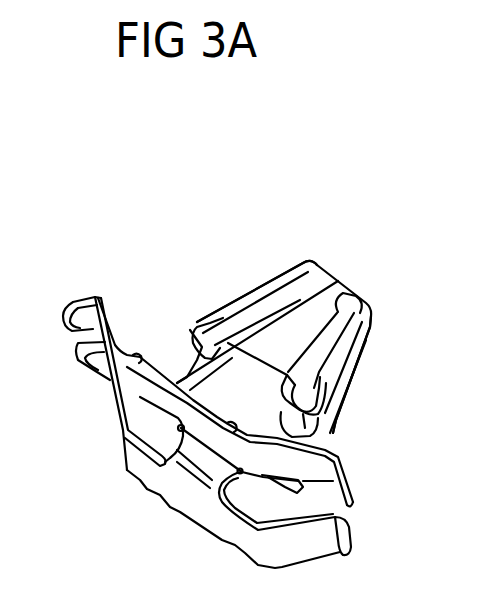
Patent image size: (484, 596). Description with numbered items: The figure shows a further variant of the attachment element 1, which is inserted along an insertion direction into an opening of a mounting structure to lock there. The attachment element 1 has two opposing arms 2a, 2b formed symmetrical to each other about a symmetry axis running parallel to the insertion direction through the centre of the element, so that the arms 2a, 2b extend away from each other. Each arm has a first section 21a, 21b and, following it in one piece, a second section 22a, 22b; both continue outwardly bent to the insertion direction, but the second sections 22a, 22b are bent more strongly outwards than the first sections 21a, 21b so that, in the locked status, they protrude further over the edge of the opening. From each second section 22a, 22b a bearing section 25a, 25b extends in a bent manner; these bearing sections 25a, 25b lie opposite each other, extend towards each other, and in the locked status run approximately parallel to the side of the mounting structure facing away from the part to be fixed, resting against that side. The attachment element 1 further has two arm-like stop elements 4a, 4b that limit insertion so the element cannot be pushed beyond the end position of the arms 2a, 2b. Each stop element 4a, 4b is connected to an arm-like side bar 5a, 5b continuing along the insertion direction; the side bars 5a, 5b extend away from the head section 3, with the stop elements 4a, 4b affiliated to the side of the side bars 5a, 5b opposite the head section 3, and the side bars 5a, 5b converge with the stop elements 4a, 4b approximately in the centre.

The attachment element 1 is at (358, 265).
The arm 2a is at (345, 357).
The arm 2b is at (275, 277).
The head section 3 is at (328, 287).
The stop element 4a is at (190, 500).
The stop element 4b is at (183, 402).
The side bar 5a is at (290, 328).
The side bar 5b is at (297, 375).
The first section 21a is at (348, 347).
The first section 21b is at (252, 298).
The second section 22a is at (317, 415).
The second section 22b is at (207, 322).
The bearing section 25a is at (322, 432).
The bearing section 25b is at (195, 350).